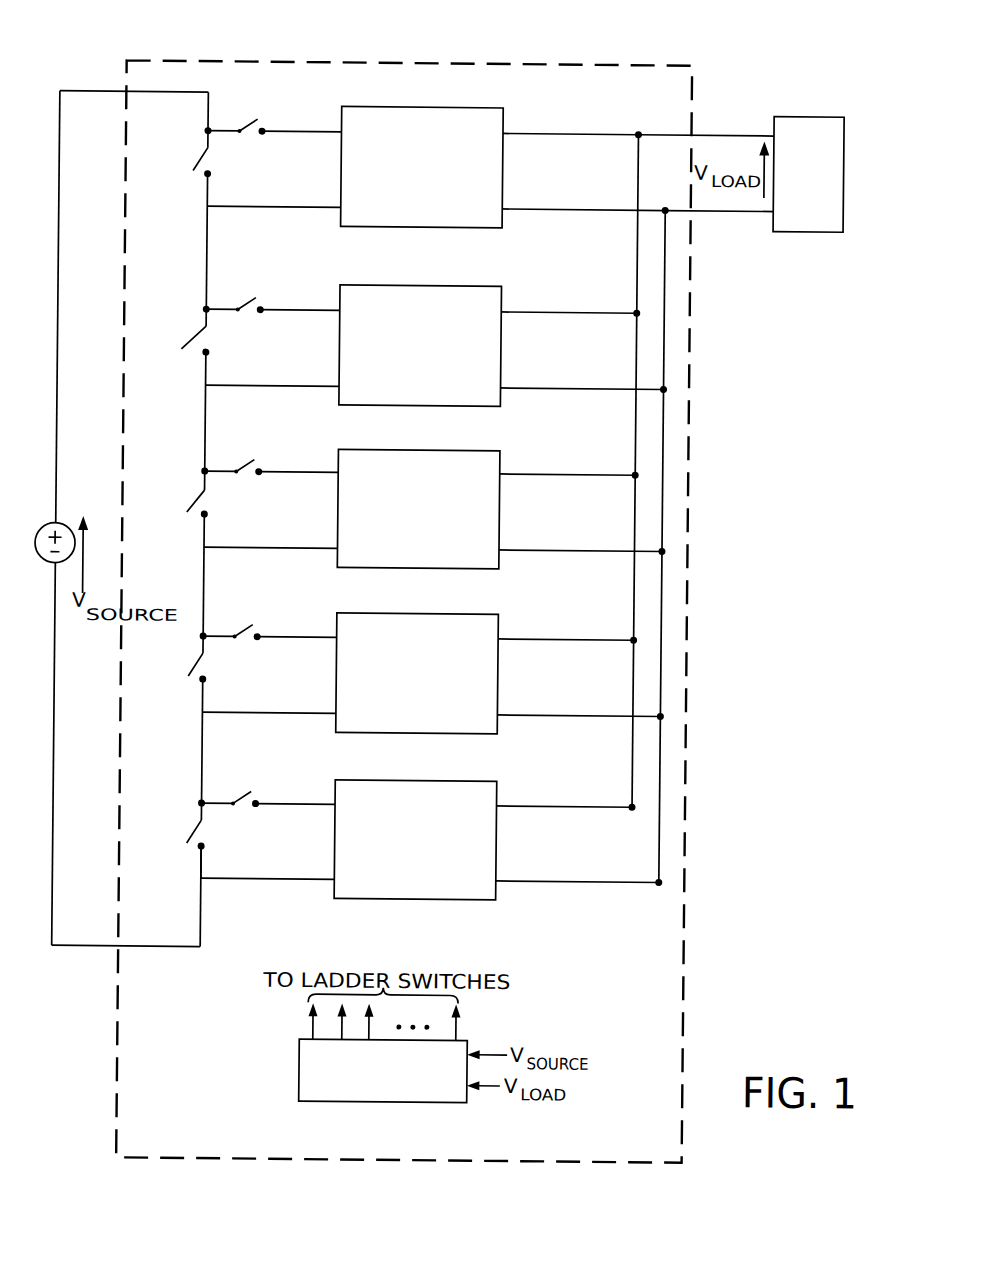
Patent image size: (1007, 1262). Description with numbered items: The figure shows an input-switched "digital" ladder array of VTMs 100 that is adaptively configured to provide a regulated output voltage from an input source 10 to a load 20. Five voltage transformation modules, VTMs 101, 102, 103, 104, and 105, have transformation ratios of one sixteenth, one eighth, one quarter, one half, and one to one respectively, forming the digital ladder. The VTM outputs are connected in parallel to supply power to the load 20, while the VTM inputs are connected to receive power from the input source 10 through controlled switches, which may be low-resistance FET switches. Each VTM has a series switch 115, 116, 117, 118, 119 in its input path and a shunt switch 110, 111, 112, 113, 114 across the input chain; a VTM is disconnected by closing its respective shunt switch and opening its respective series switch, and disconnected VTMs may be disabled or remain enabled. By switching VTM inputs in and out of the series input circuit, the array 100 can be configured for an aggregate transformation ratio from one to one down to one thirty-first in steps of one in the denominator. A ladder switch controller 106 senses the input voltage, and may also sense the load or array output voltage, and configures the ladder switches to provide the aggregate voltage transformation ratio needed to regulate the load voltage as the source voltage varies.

The adaptive VTM array 100 is at (397, 62).
The input source 10 is at (66, 528).
The load 20 is at (800, 113).
The VTM 101 is at (422, 167).
The VTM 102 is at (420, 346).
The VTM 103 is at (418, 509).
The VTM 104 is at (417, 673).
The VTM 105 is at (415, 840).
The ladder switch controller 106 is at (304, 1074).
The shunt switch 110 is at (184, 218).
The shunt switch 111 is at (181, 388).
The shunt switch 112 is at (179, 551).
The shunt switch 113 is at (179, 717).
The shunt switch 114 is at (178, 838).
The series switch 115 is at (275, 113).
The series switch 116 is at (273, 292).
The series switch 117 is at (272, 455).
The series switch 118 is at (270, 618).
The series switch 119 is at (269, 785).